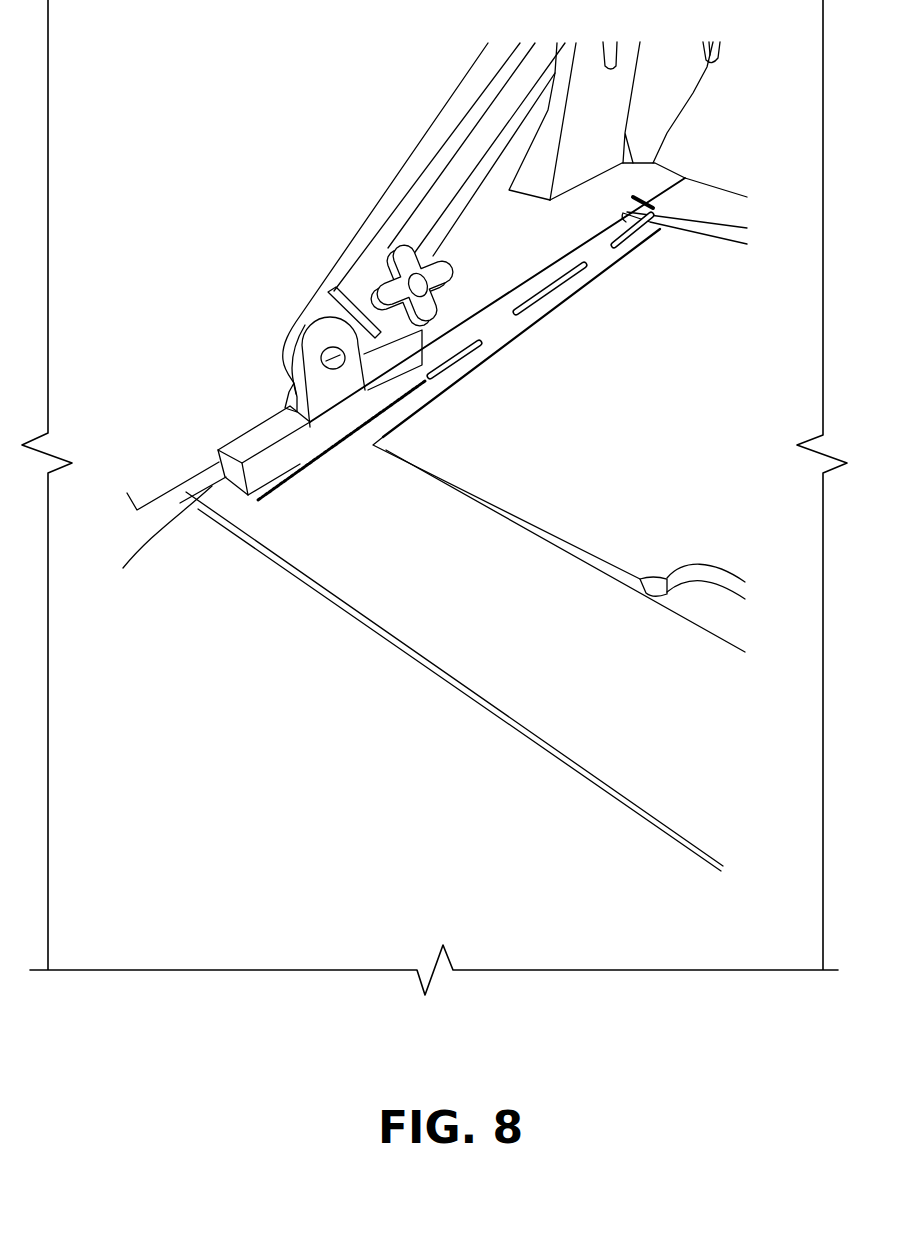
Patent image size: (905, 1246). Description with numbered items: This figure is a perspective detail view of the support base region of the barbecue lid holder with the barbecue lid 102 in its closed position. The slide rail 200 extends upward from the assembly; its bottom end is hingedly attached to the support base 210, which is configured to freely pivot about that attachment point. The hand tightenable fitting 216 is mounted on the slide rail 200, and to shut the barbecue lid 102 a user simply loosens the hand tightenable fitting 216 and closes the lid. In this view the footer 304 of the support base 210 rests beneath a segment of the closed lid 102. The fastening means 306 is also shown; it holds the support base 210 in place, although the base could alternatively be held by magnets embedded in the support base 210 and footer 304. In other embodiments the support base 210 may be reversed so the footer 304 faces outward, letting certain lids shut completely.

The barbecue lid 102 is at (248, 392).
The slide rail 200 is at (413, 148).
The support base 210 is at (323, 422).
The hand tightenable fitting 216 is at (397, 268).
The footer 304 is at (213, 482).
The fastening means 306 is at (368, 425).